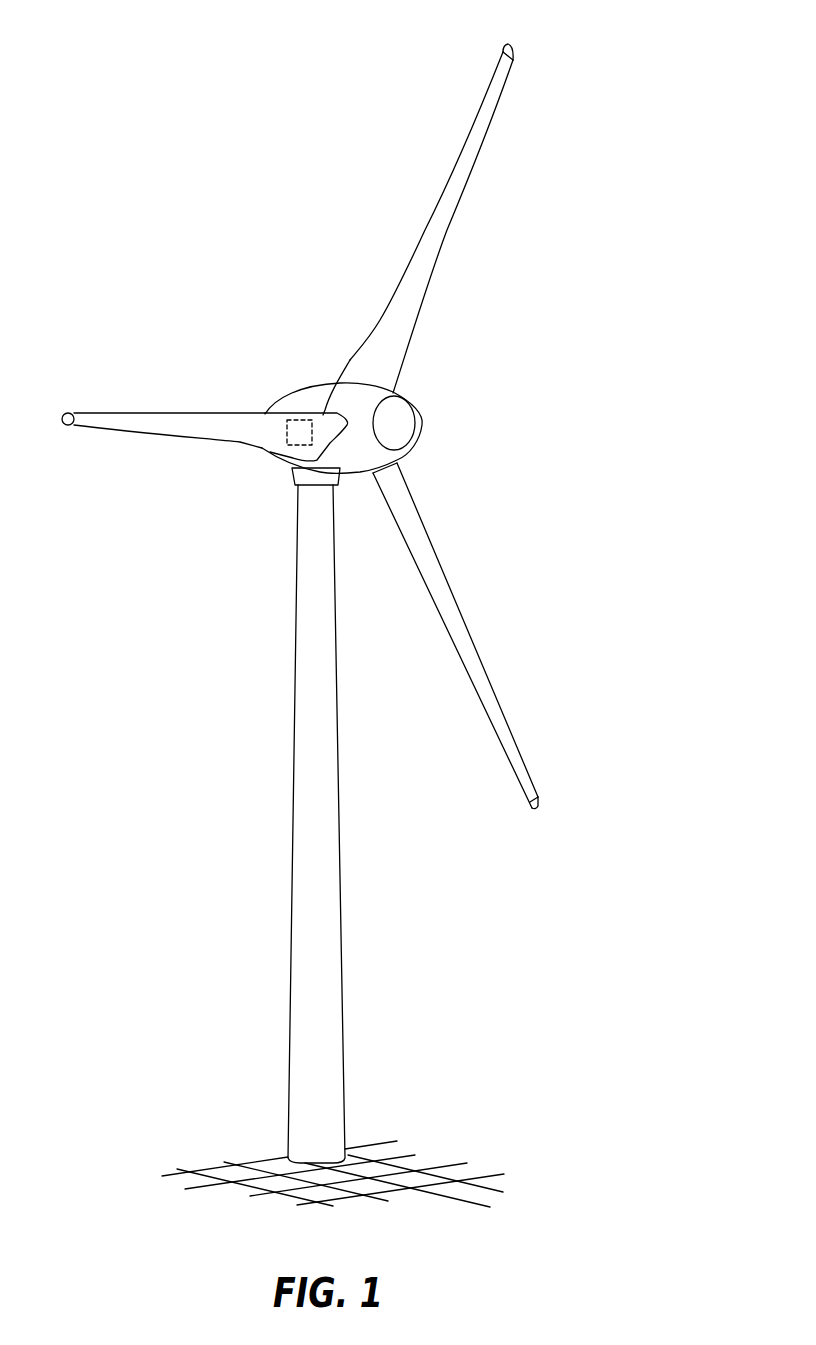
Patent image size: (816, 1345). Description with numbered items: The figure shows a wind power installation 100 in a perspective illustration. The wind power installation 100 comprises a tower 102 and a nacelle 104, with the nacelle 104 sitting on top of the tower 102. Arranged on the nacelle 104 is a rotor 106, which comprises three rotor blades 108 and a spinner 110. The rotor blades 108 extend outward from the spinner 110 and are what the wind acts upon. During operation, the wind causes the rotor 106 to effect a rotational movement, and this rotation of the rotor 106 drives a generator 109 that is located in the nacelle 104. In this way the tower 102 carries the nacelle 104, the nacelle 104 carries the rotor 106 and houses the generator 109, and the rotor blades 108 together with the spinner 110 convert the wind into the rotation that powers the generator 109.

The wind power installation 100 is at (241, 565).
The tower 102 is at (340, 902).
The nacelle 104 is at (312, 395).
The rotor 106 is at (495, 339).
The rotor blades 108 is at (460, 177).
The generator 109 is at (290, 428).
The spinner 110 is at (400, 423).